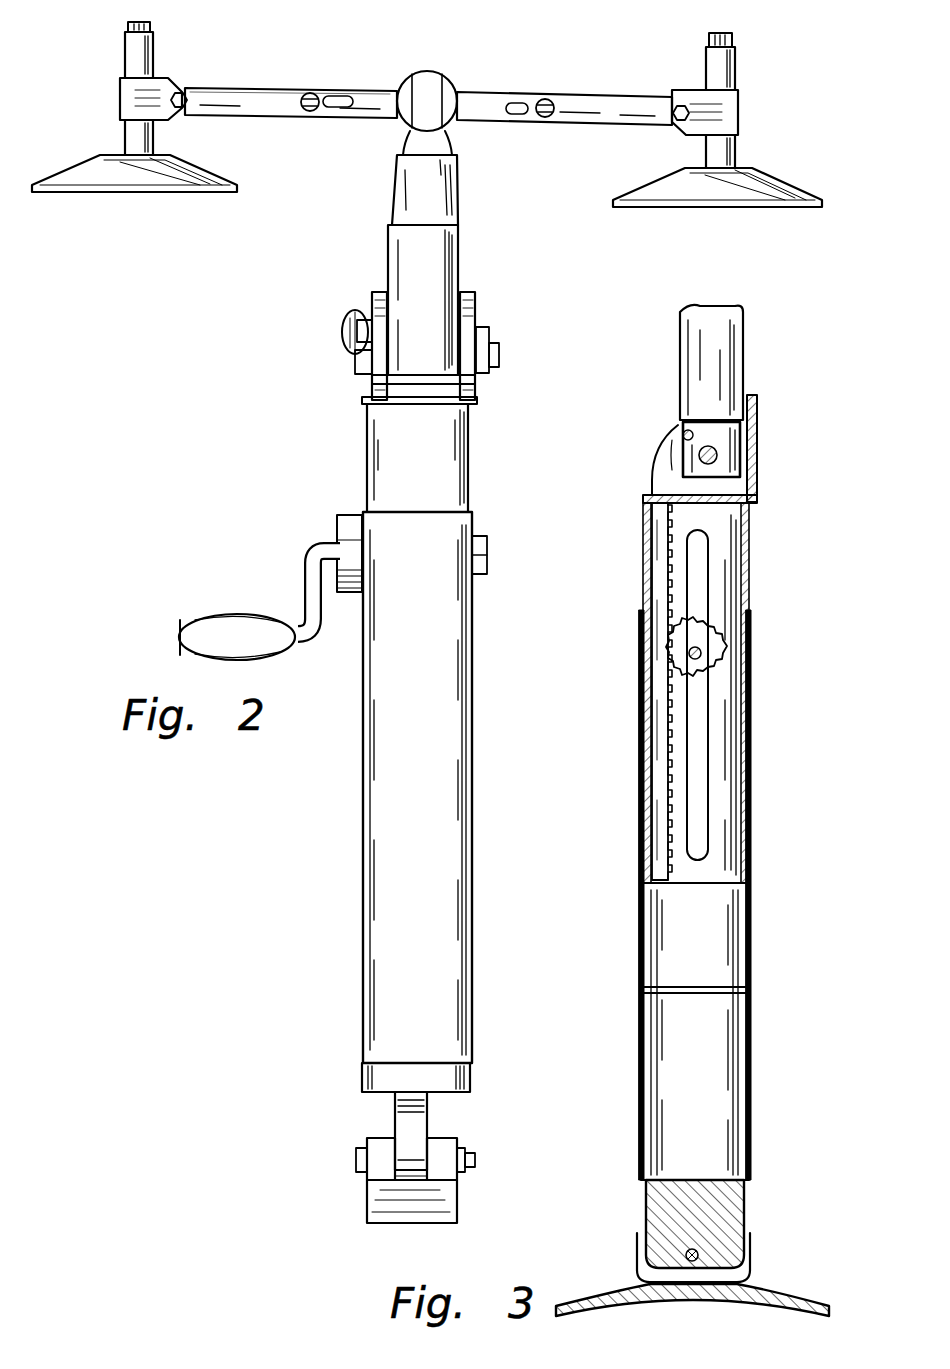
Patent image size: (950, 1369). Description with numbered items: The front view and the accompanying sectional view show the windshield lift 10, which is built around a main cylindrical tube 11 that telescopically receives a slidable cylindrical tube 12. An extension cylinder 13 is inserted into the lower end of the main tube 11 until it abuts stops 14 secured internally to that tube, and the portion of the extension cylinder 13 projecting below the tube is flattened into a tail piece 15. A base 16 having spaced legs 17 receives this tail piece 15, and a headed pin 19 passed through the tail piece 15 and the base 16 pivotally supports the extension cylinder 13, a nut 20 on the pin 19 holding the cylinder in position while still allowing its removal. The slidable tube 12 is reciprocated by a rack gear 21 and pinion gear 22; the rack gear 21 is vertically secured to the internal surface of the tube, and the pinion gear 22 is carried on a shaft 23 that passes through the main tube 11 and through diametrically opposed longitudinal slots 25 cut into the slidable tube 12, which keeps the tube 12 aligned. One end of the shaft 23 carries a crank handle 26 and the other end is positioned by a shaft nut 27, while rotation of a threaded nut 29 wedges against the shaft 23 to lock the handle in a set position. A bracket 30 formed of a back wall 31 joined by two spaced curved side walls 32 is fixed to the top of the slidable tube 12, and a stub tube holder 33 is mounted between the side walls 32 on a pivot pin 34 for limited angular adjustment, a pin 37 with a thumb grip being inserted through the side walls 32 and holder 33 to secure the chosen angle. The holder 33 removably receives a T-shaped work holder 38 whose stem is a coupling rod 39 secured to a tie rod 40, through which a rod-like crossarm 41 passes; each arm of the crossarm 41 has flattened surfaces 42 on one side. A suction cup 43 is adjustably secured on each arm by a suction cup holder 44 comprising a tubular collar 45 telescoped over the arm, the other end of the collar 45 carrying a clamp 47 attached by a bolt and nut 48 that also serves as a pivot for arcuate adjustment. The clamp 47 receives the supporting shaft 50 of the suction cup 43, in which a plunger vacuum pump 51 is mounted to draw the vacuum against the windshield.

In FIG. 2, the windshield lift 10 is at (290, 808).
In FIG. 2, the main cylindrical tube 11 is at (473, 465).
In FIG. 3, the main cylindrical tube 11 is at (722, 538).
In FIG. 2, the slidable cylindrical tube 12 is at (362, 855).
In FIG. 3, the slidable cylindrical tube 12 is at (695, 895).
In FIG. 2, the extension cylinder 13 is at (362, 1076).
In FIG. 3, the stops 14 is at (644, 991).
In FIG. 2, the tail piece 15 is at (430, 1108).
In FIG. 3, the tail piece 15 is at (646, 1193).
In FIG. 3, the base 16 is at (750, 1244).
In FIG. 3, the spaced legs 17 is at (778, 1290).
In FIG. 2, the headed pin 19 is at (360, 1148).
In FIG. 2, the nut 20 is at (466, 1148).
In FIG. 3, the rack gear 21 is at (658, 712).
In FIG. 3, the pinion gear 22 is at (715, 640).
In FIG. 2, the shaft 23 is at (334, 542).
In FIG. 3, the shaft 23 is at (702, 657).
In FIG. 3, the longitudinal slots 25 is at (695, 588).
In FIG. 2, the crank handle 26 is at (234, 612).
In FIG. 2, the shaft nut 27 is at (489, 566).
In FIG. 2, the threaded nut 29 is at (349, 515).
In FIG. 2, the bracket 30 is at (486, 297).
In FIG. 2, the back wall 31 is at (380, 292).
In FIG. 3, the back wall 31 is at (757, 448).
In FIG. 3, the side walls 32 is at (663, 455).
In FIG. 2, the stub tube holder 33 is at (460, 238).
In FIG. 3, the stub tube holder 33 is at (743, 368).
In FIG. 2, the pivot pin 34 is at (354, 362).
In FIG. 2, the pin 37 is at (344, 318).
In FIG. 2, the work holder 38 is at (352, 172).
In FIG. 2, the coupling rod 39 is at (462, 190).
In FIG. 3, the coupling rod 39 is at (743, 312).
In FIG. 2, the tie rod 40 is at (404, 128).
In FIG. 2, the crossarm 41 is at (490, 91).
In FIG. 2, the flattened surfaces 42 is at (336, 93).
In FIG. 2, the suction cup 43 is at (100, 178).
In FIG. 2, the suction cup holder 44 is at (164, 78).
In FIG. 2, the tubular collar 45 is at (231, 88).
In FIG. 2, the clamp 47 is at (120, 98).
In FIG. 2, the bolt and nut 48 is at (178, 112).
In FIG. 2, the supporting shaft 50 is at (122, 136).
In FIG. 2, the plunger vacuum pump 51 is at (134, 20).